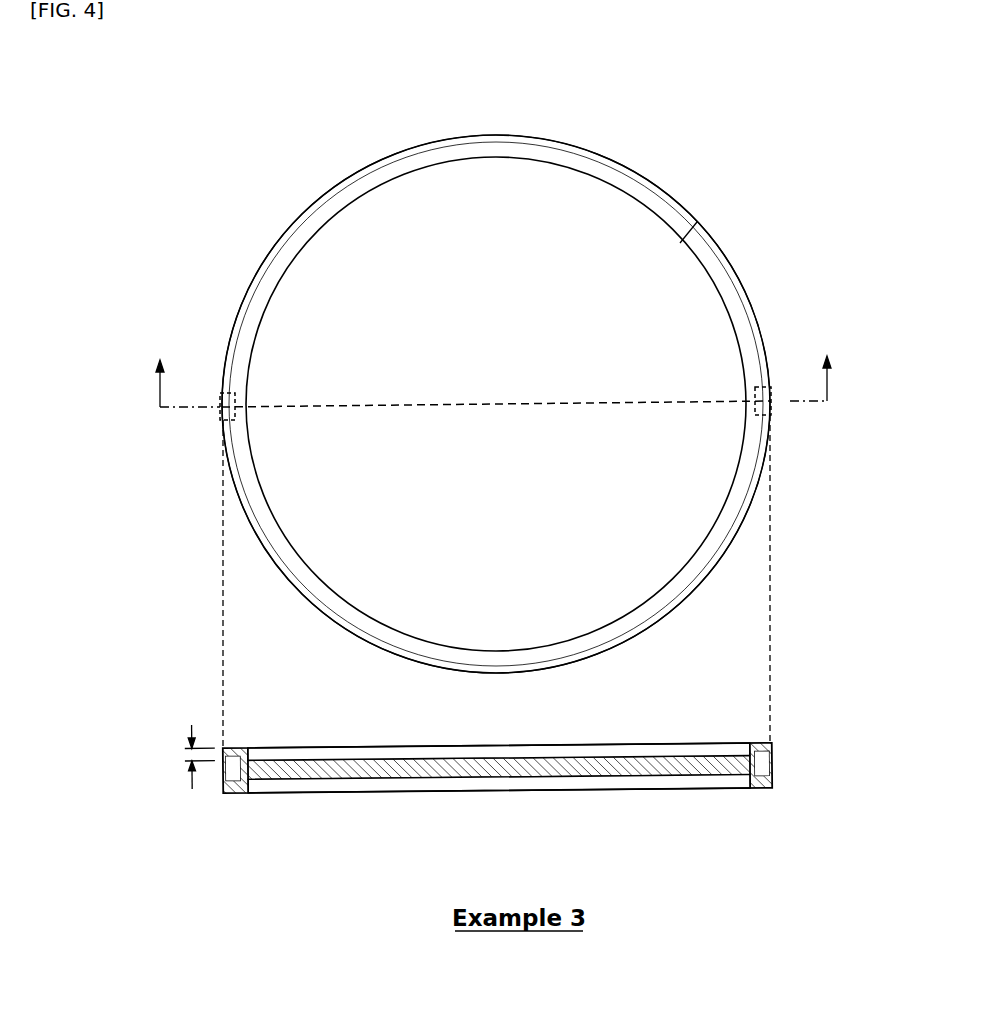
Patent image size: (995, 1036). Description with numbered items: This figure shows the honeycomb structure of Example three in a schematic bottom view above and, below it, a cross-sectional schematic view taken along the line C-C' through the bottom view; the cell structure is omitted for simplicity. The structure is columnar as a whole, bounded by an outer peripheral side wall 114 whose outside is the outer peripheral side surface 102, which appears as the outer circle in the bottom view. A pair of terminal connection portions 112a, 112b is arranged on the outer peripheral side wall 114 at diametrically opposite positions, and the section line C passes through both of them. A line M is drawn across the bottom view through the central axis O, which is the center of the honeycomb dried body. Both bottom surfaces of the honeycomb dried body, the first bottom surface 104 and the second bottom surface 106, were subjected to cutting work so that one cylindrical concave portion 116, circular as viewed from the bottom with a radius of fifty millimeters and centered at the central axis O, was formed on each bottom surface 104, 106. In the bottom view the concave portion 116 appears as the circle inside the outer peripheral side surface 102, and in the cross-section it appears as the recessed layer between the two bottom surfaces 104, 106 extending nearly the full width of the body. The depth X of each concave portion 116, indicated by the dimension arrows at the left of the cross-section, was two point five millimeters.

The outer peripheral side surface 102 is at (321, 613).
The first bottom surface 104 is at (570, 745).
The second bottom surface 106 is at (502, 792).
The terminal connection portion 112a is at (220, 412).
The terminal connection portion 112b is at (772, 400).
The outer peripheral side wall 114 is at (743, 288).
The cylindrical concave portion 116 is at (697, 222).
The central axis O is at (496, 404).
The reference line M is at (273, 405).
The line C-C' C is at (496, 370).
The depth of concave portion X is at (190, 757).